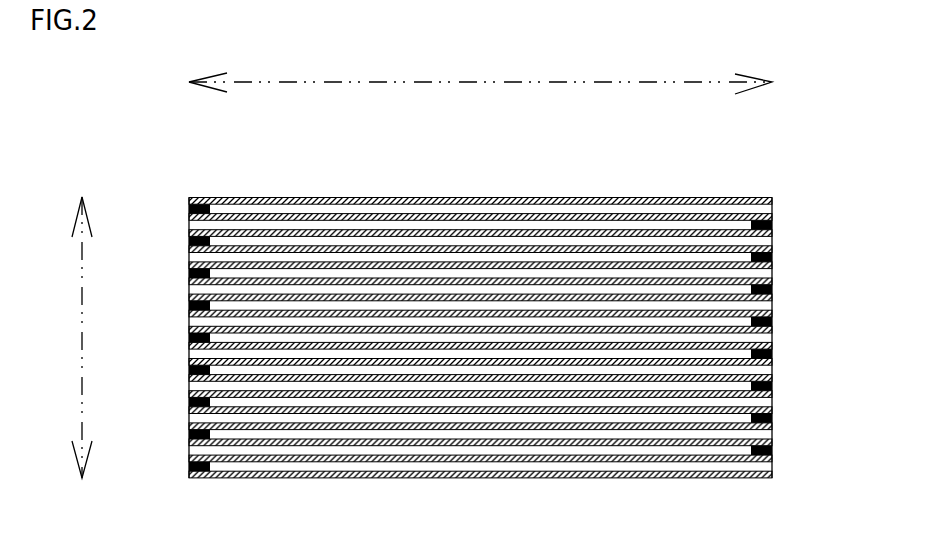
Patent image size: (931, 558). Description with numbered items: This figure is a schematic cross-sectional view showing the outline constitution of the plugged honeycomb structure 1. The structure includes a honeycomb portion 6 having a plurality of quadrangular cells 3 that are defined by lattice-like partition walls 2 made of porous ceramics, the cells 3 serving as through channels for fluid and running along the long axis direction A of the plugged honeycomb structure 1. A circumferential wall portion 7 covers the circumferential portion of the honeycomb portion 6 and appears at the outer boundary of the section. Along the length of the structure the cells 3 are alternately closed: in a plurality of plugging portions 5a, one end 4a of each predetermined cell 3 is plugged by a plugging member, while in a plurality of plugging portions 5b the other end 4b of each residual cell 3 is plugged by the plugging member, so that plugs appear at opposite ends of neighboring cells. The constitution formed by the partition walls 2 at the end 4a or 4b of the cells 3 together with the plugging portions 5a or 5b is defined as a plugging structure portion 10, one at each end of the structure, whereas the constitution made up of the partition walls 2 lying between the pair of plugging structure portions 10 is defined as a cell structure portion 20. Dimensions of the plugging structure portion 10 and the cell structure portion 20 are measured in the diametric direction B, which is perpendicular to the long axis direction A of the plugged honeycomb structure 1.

The plugged honeycomb structure 1 is at (475, 322).
The partition walls 2 is at (187, 287).
The cells 3 is at (188, 358).
The one end of cell 4a is at (189, 412).
The other end of cell 4b is at (772, 414).
The plugging portions 5a is at (189, 305).
The plugging portions 5b is at (772, 293).
The honeycomb portion 6 is at (403, 427).
The circumferential wall portion 7 is at (470, 480).
The plugging structure portion 10 is at (133, 237).
The cell structure portion 20 is at (481, 345).
The long axis direction A is at (318, 88).
The diametric direction B is at (82, 323).